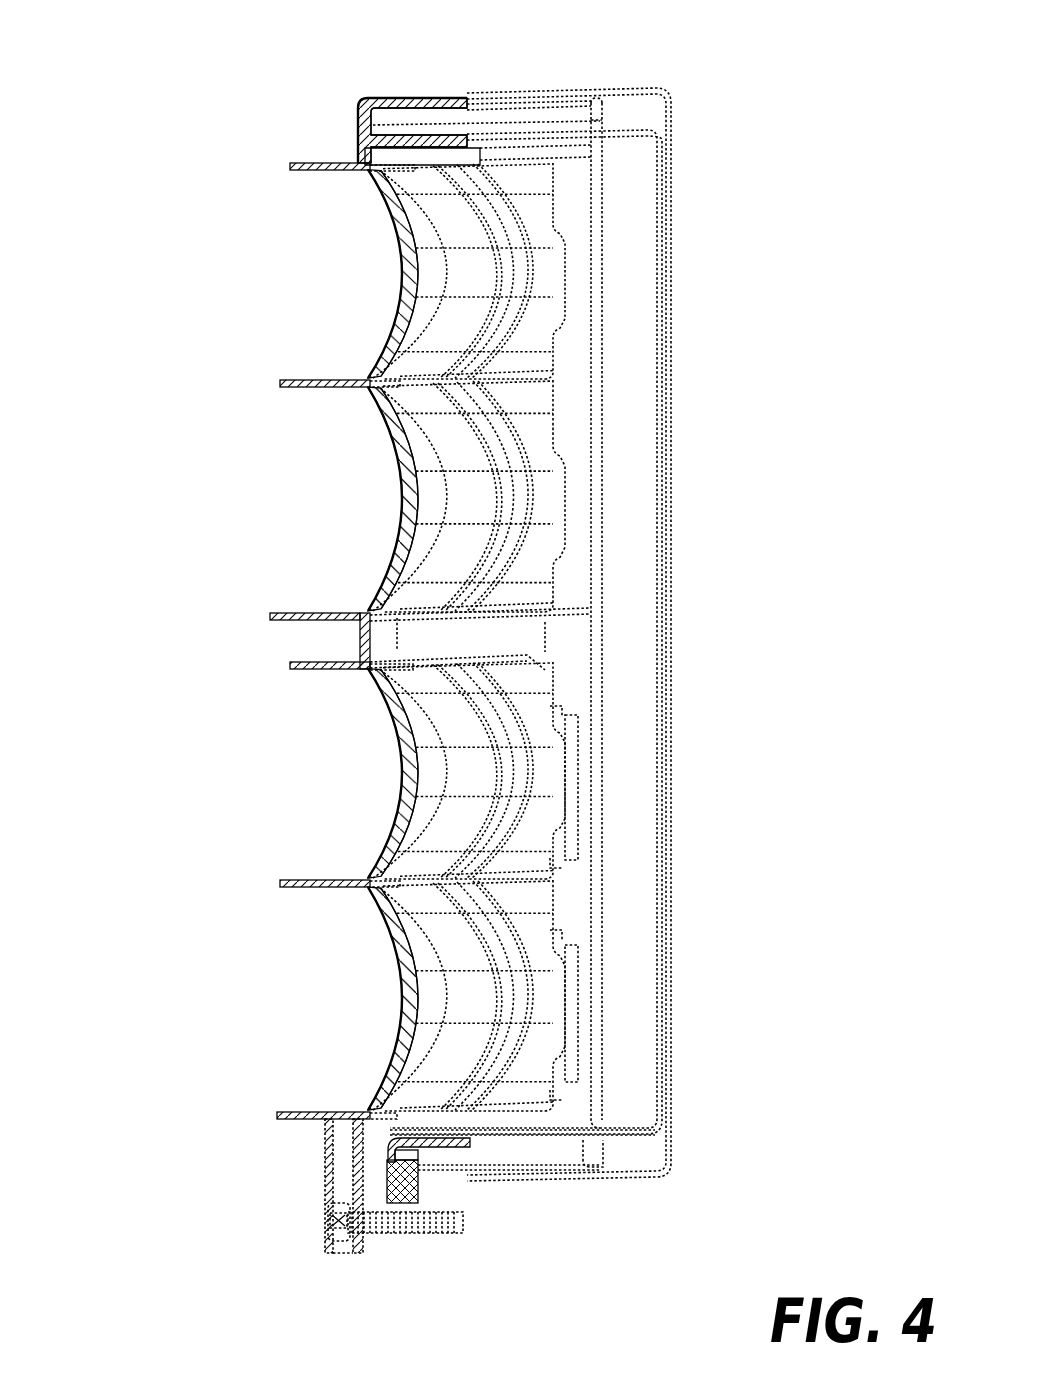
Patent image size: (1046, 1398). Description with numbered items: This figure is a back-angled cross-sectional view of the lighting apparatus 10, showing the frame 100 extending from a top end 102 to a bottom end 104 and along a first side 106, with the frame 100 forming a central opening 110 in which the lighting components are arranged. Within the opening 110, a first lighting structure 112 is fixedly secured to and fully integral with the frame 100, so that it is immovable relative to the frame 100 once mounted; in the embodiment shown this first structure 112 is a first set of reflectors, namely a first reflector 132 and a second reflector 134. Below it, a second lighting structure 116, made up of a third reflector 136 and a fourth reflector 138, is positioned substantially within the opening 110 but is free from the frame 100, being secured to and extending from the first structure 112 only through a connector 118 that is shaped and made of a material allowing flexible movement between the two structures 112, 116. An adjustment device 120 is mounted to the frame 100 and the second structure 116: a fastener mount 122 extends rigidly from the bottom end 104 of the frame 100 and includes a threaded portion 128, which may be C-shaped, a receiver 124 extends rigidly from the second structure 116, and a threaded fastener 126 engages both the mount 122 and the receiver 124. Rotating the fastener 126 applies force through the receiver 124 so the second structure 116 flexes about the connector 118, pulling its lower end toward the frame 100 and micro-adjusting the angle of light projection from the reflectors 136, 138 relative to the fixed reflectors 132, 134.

The lighting apparatus 10 is at (157, 90).
The frame 100 is at (380, 98).
The top end 102 is at (501, 68).
The bottom end 104 is at (581, 1210).
The first side 106 is at (690, 398).
The central opening 110 is at (544, 643).
The first lighting structure 112 is at (236, 317).
The second lighting structure 116 is at (293, 904).
The connector 118 is at (336, 642).
The adjustment device 120 is at (427, 1238).
The fastener mount 122 is at (416, 1203).
The receiver 124 is at (325, 1158).
The threaded fastener 126 is at (456, 1236).
The threaded portion 128 is at (388, 1237).
The first reflector 132 is at (405, 272).
The second reflector 134 is at (400, 500).
The third reflector 136 is at (400, 775).
The fourth reflector 138 is at (400, 1000).